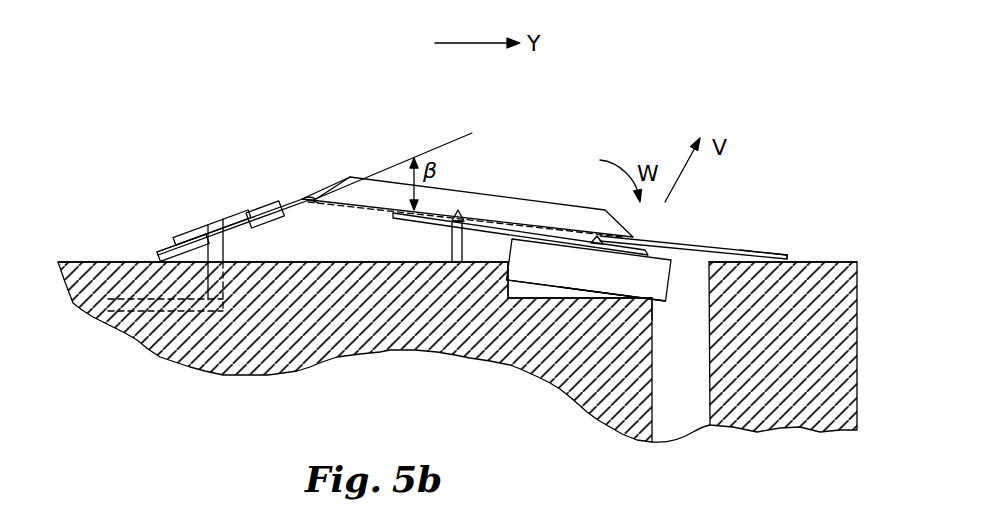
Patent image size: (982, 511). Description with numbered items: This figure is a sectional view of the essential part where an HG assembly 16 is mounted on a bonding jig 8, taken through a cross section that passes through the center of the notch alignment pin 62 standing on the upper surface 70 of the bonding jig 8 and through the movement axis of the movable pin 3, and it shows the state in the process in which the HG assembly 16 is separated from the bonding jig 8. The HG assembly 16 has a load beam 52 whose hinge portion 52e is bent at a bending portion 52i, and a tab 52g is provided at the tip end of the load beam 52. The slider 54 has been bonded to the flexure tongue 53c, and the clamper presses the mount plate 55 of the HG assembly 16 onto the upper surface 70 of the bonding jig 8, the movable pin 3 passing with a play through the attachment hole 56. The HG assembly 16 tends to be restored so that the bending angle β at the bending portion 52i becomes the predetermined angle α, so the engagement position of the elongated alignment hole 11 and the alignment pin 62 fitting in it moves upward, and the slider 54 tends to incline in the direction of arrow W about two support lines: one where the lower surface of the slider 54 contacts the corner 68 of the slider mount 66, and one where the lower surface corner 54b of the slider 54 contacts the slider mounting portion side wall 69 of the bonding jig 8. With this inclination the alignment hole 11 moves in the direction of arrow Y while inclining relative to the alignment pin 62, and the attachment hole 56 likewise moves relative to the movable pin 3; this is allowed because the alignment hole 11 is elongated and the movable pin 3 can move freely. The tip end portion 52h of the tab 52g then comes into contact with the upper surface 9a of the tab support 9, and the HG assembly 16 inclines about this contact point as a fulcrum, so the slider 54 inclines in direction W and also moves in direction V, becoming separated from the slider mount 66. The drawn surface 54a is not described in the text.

The movable pin 3 is at (212, 222).
The bonding jig 8 is at (553, 440).
The tab support 9 is at (803, 424).
The upper surface of the tab support 9a is at (832, 262).
The elongated alignment hole 11 is at (470, 222).
The HG assembly 16 is at (500, 132).
The load beam 52 is at (520, 208).
The hinge portion 52e is at (302, 203).
The tab 52g is at (770, 252).
The tip end portion of the tab 52h is at (791, 256).
The bending portion 52i is at (302, 198).
The flexure tongue 53c is at (640, 236).
The slider 54 is at (657, 277).
The upper strip of clamping block 54a is at (670, 255).
The lower surface corner of the slider 54b is at (510, 280).
The mount plate 55 is at (254, 228).
The attachment hole 56 is at (220, 218).
The notch alignment pin 62 is at (452, 213).
The slider mount 66 is at (606, 298).
The corner of the slider mount 68 is at (653, 302).
The slider mounting portion side wall 69 is at (512, 296).
The upper surface of the bonding jig 70 is at (298, 263).